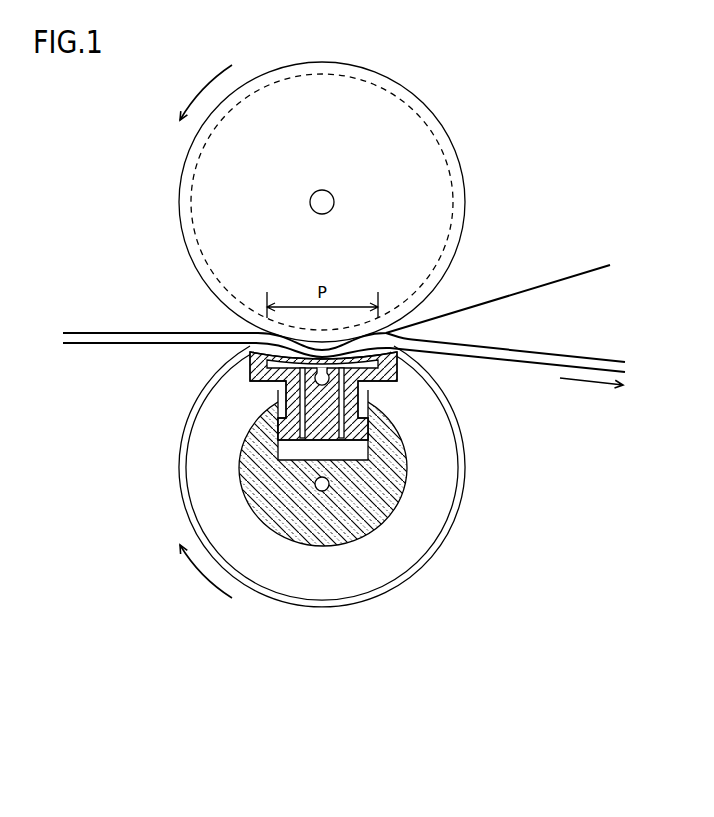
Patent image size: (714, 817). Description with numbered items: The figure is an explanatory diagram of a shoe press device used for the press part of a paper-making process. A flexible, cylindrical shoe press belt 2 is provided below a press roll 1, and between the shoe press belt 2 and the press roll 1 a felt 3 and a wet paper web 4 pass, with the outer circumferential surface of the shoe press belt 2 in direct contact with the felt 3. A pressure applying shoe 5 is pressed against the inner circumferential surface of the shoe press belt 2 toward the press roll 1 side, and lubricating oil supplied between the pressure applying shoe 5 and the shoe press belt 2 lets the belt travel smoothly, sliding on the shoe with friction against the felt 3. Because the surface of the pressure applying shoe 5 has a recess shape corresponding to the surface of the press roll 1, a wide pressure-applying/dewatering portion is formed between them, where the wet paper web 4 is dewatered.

The press roll 1 is at (466, 184).
The shoe press belt 2 is at (460, 505).
The felt 3 is at (88, 344).
The wet paper web 4 is at (110, 333).
The pressure applying shoe 5 is at (400, 372).